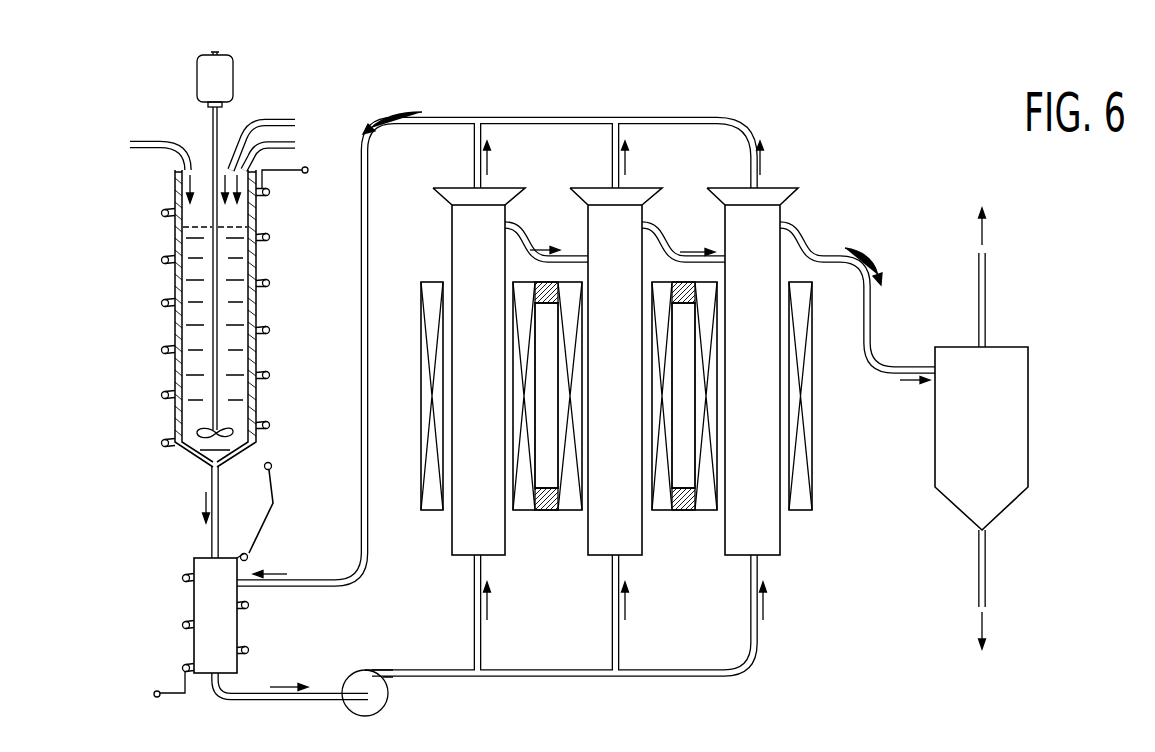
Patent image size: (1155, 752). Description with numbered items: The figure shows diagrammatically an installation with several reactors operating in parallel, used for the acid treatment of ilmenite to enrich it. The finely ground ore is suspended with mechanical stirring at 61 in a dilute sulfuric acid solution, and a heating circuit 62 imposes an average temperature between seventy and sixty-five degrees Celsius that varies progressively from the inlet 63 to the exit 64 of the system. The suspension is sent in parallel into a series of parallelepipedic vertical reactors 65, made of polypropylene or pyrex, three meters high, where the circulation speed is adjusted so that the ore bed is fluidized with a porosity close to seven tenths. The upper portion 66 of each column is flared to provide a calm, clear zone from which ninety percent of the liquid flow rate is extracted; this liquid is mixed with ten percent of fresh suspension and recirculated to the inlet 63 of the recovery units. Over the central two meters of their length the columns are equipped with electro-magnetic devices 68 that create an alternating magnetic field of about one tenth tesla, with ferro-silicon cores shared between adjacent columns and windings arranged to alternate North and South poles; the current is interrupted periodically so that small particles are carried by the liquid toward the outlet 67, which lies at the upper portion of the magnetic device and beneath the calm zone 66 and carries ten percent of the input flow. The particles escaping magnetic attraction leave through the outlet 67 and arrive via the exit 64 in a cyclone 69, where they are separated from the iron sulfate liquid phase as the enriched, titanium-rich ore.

The mechanical stirring vessel 61 is at (256, 258).
The heating circuit 62 is at (270, 377).
The inlet 63 is at (318, 690).
The exit 64 is at (871, 366).
The parallelepipedic vertical reactors 65 is at (452, 533).
The upper portion of the columns 66 is at (445, 200).
The outlet 67 is at (523, 237).
The electro-magnetic devices 68 is at (547, 520).
The cyclone 69 is at (1000, 441).